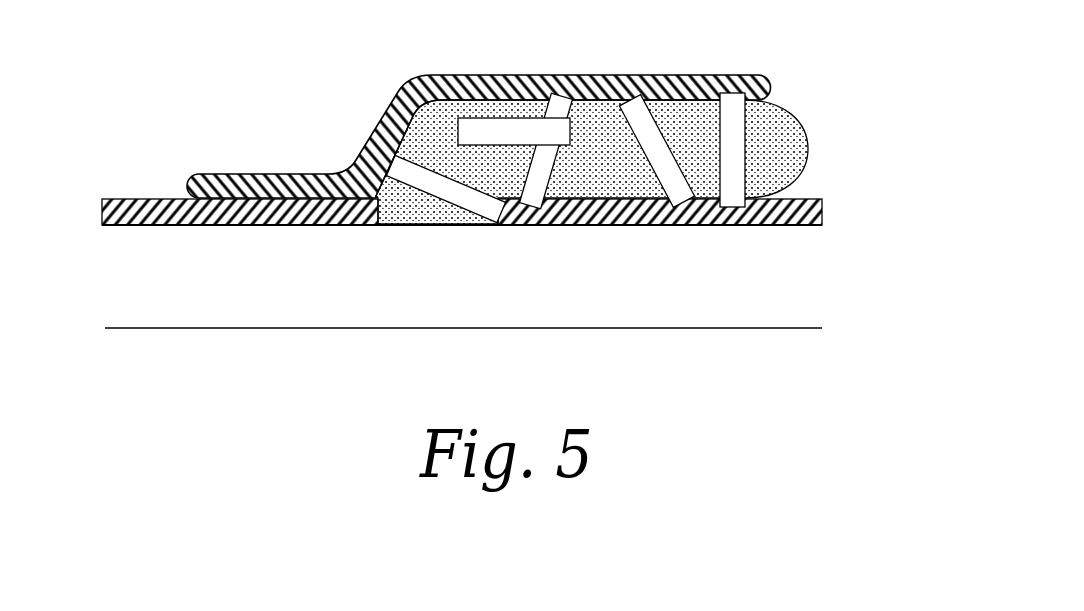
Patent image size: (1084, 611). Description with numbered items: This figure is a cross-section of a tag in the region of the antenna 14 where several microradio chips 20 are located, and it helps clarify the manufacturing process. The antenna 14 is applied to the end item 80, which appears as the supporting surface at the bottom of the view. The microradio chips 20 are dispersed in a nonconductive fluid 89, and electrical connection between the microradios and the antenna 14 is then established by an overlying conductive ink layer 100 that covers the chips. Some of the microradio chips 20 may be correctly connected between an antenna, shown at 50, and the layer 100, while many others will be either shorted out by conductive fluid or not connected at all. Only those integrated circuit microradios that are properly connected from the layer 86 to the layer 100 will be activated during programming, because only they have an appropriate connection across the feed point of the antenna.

The antenna 14 is at (818, 184).
The microradio chips 20 is at (638, 110).
The antenna 50 is at (125, 180).
The end item 80 is at (298, 275).
The layer 86 is at (165, 206).
The nonconductive fluid 89 is at (405, 200).
The conductive ink layer 100 is at (518, 64).